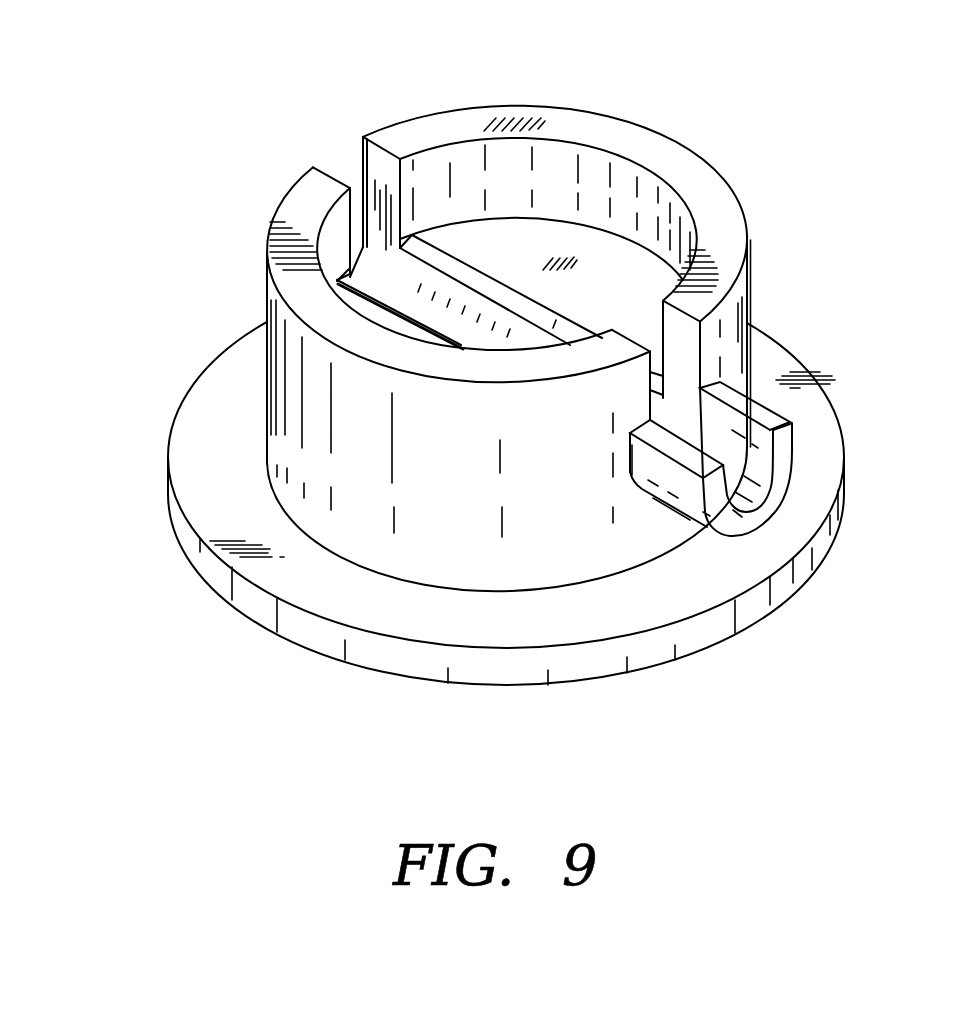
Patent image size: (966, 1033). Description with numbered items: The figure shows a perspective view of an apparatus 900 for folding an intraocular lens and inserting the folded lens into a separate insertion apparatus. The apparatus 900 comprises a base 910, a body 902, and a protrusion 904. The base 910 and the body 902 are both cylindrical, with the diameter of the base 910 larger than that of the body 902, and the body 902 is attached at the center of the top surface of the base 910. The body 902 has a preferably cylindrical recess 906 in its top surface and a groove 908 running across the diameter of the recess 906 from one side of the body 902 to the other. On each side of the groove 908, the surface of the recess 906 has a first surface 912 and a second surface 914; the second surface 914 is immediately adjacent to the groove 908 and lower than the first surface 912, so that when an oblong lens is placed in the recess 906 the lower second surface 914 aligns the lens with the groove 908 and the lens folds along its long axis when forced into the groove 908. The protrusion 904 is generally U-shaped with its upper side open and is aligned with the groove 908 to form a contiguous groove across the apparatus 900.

The apparatus 900 is at (833, 72).
The body 902 is at (747, 285).
The protrusion 904 is at (777, 500).
The recess 906 is at (322, 247).
The groove 908 is at (363, 243).
The base 910 is at (255, 620).
The first surface 912 is at (553, 250).
The second surface 914 is at (437, 270).